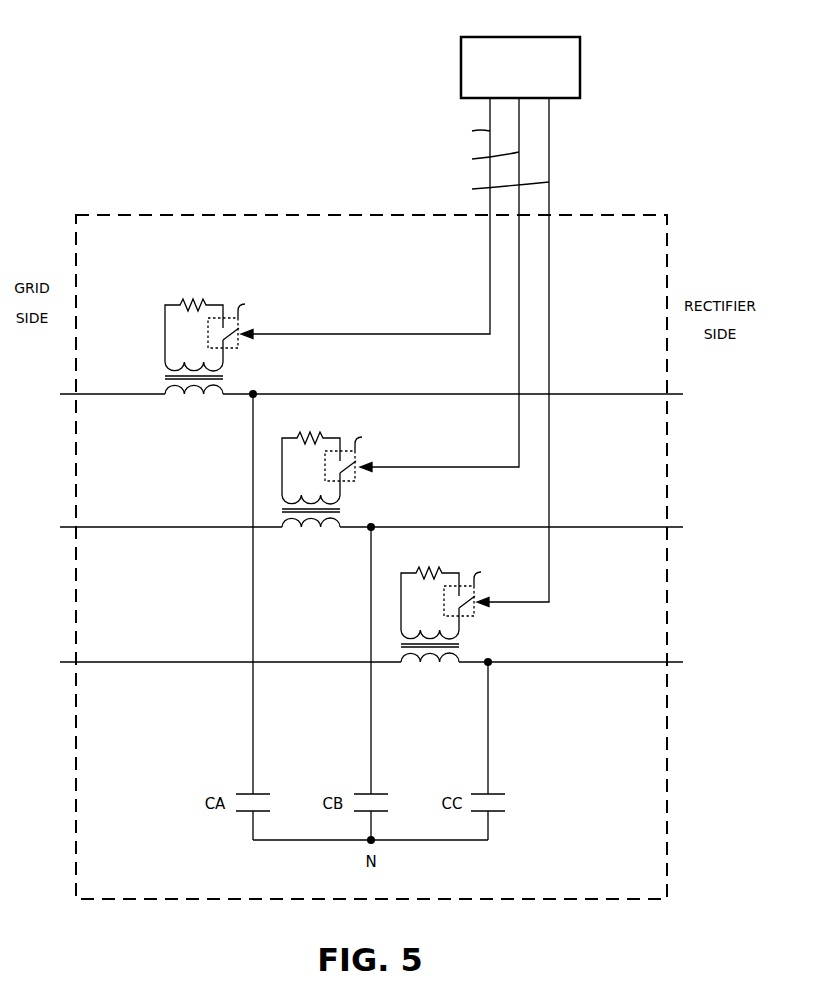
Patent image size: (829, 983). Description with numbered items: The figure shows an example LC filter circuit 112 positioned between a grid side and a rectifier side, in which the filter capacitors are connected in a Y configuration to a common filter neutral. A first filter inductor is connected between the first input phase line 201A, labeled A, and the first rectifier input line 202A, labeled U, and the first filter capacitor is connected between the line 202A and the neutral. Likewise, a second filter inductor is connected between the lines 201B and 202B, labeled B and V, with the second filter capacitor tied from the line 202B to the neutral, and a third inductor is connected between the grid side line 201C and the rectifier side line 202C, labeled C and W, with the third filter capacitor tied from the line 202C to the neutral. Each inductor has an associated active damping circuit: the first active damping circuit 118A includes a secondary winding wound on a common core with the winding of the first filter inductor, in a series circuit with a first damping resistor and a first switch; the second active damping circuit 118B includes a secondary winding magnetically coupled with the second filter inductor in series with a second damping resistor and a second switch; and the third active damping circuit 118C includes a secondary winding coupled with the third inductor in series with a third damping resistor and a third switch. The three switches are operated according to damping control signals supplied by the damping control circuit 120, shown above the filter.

The damping control circuit 120 is at (521, 37).
The LC filter circuit 112 is at (371, 215).
The active damping circuit 118A is at (243, 285).
The second active damping circuit 118B is at (400, 325).
The third active damping circuit 118C is at (475, 393).
The first input phase line 201A is at (135, 394).
The input phase line 201B is at (135, 527).
The grid side line 201C is at (135, 662).
The first rectifier input line 202A is at (651, 394).
The rectifier input line 202B is at (651, 527).
The rectifier side line 202C is at (651, 662).